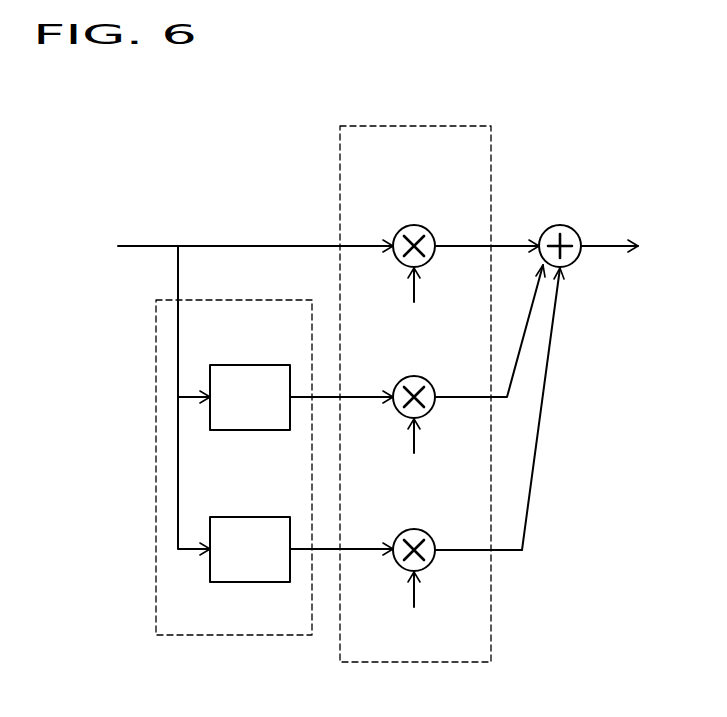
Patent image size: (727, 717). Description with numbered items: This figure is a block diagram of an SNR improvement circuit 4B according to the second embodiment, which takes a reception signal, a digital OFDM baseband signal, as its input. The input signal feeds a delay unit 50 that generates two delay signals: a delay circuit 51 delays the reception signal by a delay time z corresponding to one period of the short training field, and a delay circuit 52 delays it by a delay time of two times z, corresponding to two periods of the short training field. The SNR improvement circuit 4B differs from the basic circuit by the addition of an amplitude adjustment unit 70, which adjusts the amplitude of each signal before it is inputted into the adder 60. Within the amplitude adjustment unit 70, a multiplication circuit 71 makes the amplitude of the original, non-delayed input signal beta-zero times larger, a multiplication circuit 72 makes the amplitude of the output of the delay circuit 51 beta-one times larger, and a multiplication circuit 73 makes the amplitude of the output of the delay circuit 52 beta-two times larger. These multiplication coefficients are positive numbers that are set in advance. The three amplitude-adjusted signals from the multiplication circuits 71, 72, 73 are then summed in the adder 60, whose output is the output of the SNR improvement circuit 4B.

The SNR improvement circuit 4B is at (163, 125).
The amplitude adjustment unit 70 is at (340, 152).
The multiplication circuit 71 is at (413, 224).
The multiplication circuit 72 is at (413, 375).
The multiplication circuit 73 is at (413, 528).
The adder 60 is at (561, 225).
The delay unit 50 is at (235, 300).
The delay circuit 51 is at (230, 430).
The delay circuit 52 is at (230, 582).